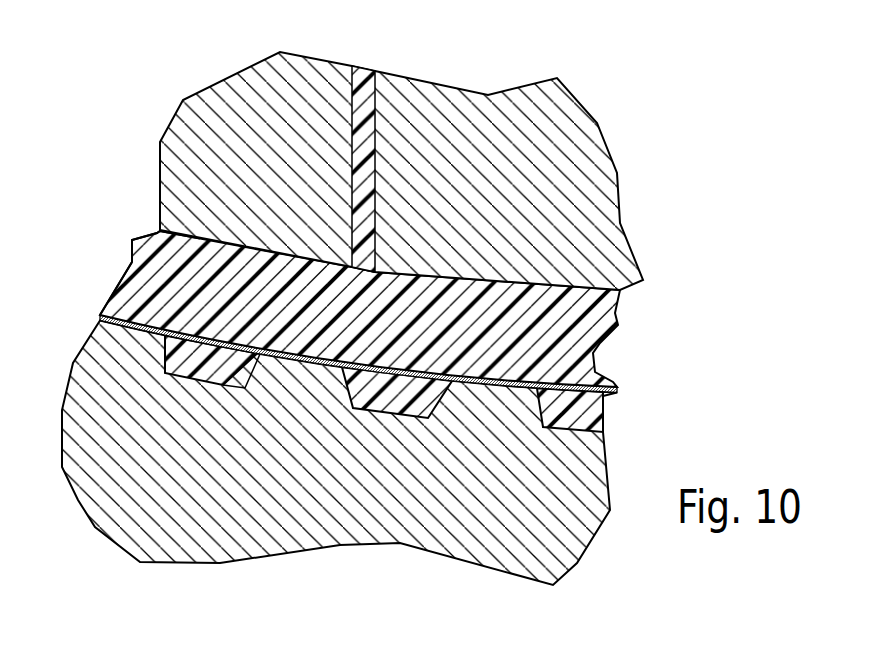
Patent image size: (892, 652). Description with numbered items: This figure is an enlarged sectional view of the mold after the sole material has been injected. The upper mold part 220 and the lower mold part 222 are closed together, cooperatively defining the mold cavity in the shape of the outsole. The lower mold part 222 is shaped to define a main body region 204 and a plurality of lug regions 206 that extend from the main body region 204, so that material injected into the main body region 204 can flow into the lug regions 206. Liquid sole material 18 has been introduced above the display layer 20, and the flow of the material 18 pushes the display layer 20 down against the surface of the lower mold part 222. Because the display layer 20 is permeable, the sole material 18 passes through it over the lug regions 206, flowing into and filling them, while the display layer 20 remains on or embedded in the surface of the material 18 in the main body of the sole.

The upper mold part 220 is at (588, 162).
The main body region 204 is at (160, 270).
The sole material 18 is at (592, 332).
The display layer 20 is at (612, 386).
The lower mold part 222 is at (593, 470).
The lug regions 206 is at (543, 422).